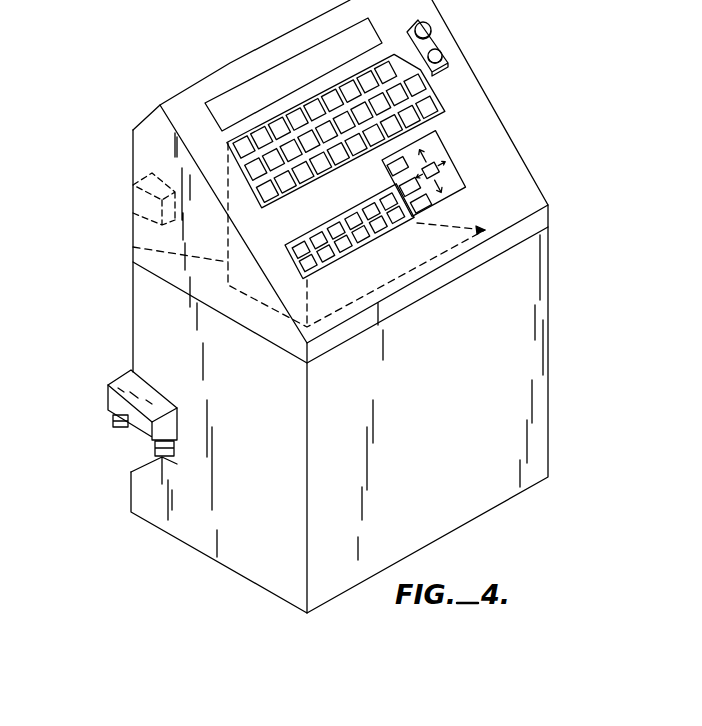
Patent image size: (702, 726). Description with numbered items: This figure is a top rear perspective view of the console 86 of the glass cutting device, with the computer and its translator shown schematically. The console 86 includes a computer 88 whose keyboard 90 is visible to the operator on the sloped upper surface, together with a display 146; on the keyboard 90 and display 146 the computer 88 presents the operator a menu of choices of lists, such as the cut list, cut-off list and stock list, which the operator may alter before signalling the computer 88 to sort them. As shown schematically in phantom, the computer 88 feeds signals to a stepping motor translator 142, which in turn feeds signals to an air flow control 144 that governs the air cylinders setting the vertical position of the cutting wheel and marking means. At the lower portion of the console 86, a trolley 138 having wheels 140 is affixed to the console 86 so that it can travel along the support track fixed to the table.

The console 86 is at (534, 184).
The keyboard 90 is at (270, 131).
The display 146 is at (232, 106).
The air flow control 144 is at (131, 198).
The computer 88 is at (87, 258).
The stepping motor translator 142 is at (133, 248).
The trolley 138 is at (108, 401).
The wheels 140 is at (115, 432).